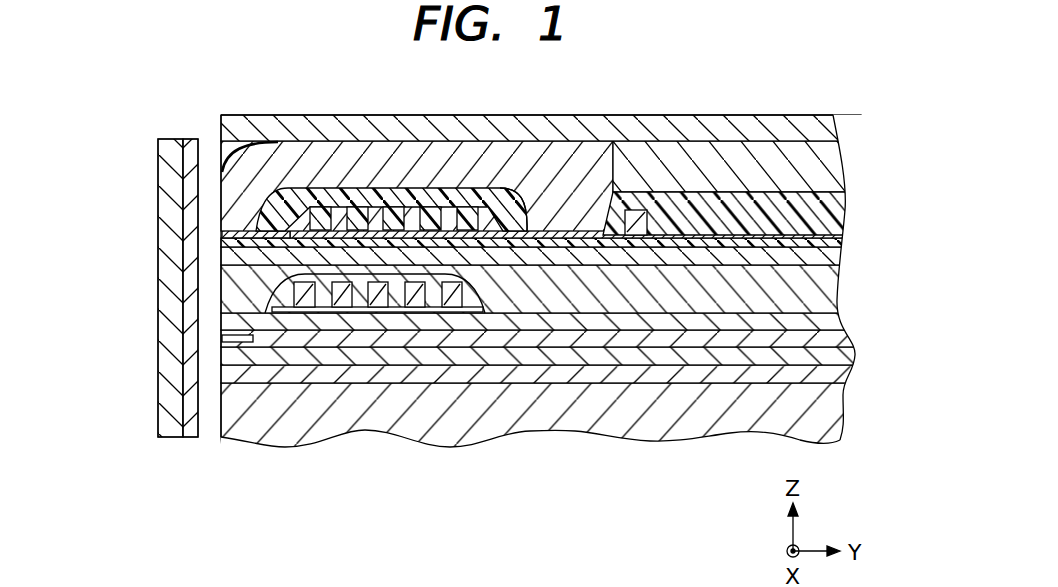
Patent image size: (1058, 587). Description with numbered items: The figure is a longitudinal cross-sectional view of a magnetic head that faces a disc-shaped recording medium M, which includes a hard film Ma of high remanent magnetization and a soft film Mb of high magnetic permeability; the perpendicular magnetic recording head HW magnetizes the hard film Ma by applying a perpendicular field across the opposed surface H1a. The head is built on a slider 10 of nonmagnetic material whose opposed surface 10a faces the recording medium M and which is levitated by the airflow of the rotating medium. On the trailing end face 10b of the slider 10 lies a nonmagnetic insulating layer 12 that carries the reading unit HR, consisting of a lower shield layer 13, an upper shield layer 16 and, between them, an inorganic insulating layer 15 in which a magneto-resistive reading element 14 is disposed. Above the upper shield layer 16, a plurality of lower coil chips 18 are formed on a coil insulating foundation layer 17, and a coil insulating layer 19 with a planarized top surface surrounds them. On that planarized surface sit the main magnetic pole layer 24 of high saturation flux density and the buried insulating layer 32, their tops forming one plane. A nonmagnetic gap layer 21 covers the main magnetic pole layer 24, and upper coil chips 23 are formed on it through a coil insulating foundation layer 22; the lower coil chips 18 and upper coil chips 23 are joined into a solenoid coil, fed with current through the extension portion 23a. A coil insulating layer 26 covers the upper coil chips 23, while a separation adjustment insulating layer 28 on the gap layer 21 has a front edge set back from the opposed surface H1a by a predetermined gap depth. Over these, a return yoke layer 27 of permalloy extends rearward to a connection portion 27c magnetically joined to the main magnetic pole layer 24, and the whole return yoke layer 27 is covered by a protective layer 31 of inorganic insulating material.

The slider 10 is at (712, 430).
The opposed surface 10a is at (224, 428).
The trailing end face 10b is at (513, 385).
The nonmagnetic insulating layer 12 is at (226, 373).
The lower shield layer 13 is at (226, 356).
The reading element 14 is at (226, 338).
The inorganic insulating layer 15 is at (641, 338).
The upper shield layer 16 is at (226, 320).
The coil insulating foundation layer 17 is at (400, 314).
The lower coil chip 18 is at (224, 257).
The coil insulating layer 19 is at (226, 305).
The nonmagnetic gap layer 21 is at (224, 234).
The coil insulating foundation layer 22 is at (527, 236).
The upper coil chip 23 is at (388, 212).
The extension portion 23a is at (634, 212).
The main magnetic pole layer 24 is at (224, 243).
The coil insulating layer 26 is at (293, 190).
The return yoke layer 27 is at (452, 162).
The connection portion 27c is at (560, 237).
The separation adjustment insulating layer 28 is at (240, 228).
The protective layer 31 is at (343, 119).
The insulating layer 32 is at (890, 215).
The recording medium M is at (198, 445).
The hard film Ma is at (188, 145).
The soft film Mb is at (173, 147).
The opposed surface H1a is at (222, 182).
The perpendicular magnetic recording head HW is at (859, 116).
The reading unit HR is at (859, 316).